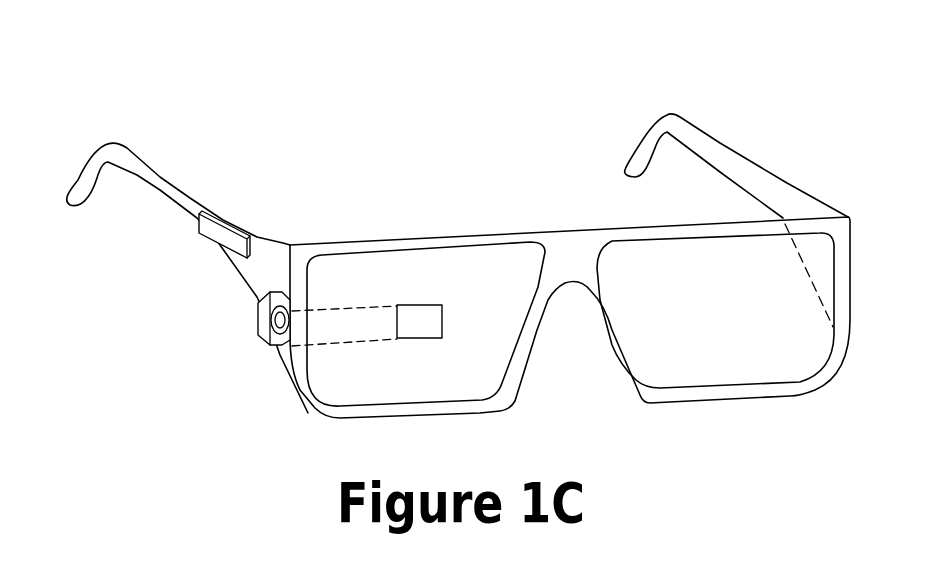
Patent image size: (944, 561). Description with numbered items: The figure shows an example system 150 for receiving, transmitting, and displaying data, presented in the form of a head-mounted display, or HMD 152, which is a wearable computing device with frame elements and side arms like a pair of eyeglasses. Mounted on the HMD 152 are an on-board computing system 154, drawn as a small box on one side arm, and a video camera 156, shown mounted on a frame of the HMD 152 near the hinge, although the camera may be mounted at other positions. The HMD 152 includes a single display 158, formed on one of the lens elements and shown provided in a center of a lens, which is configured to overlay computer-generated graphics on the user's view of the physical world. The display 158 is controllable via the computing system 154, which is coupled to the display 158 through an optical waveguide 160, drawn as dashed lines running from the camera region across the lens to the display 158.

The system 150 is at (462, 88).
The HMD 152 is at (764, 135).
The on-board computing system 154 is at (217, 233).
The video camera 156 is at (262, 323).
The display 158 is at (413, 340).
The optical waveguide 160 is at (342, 342).